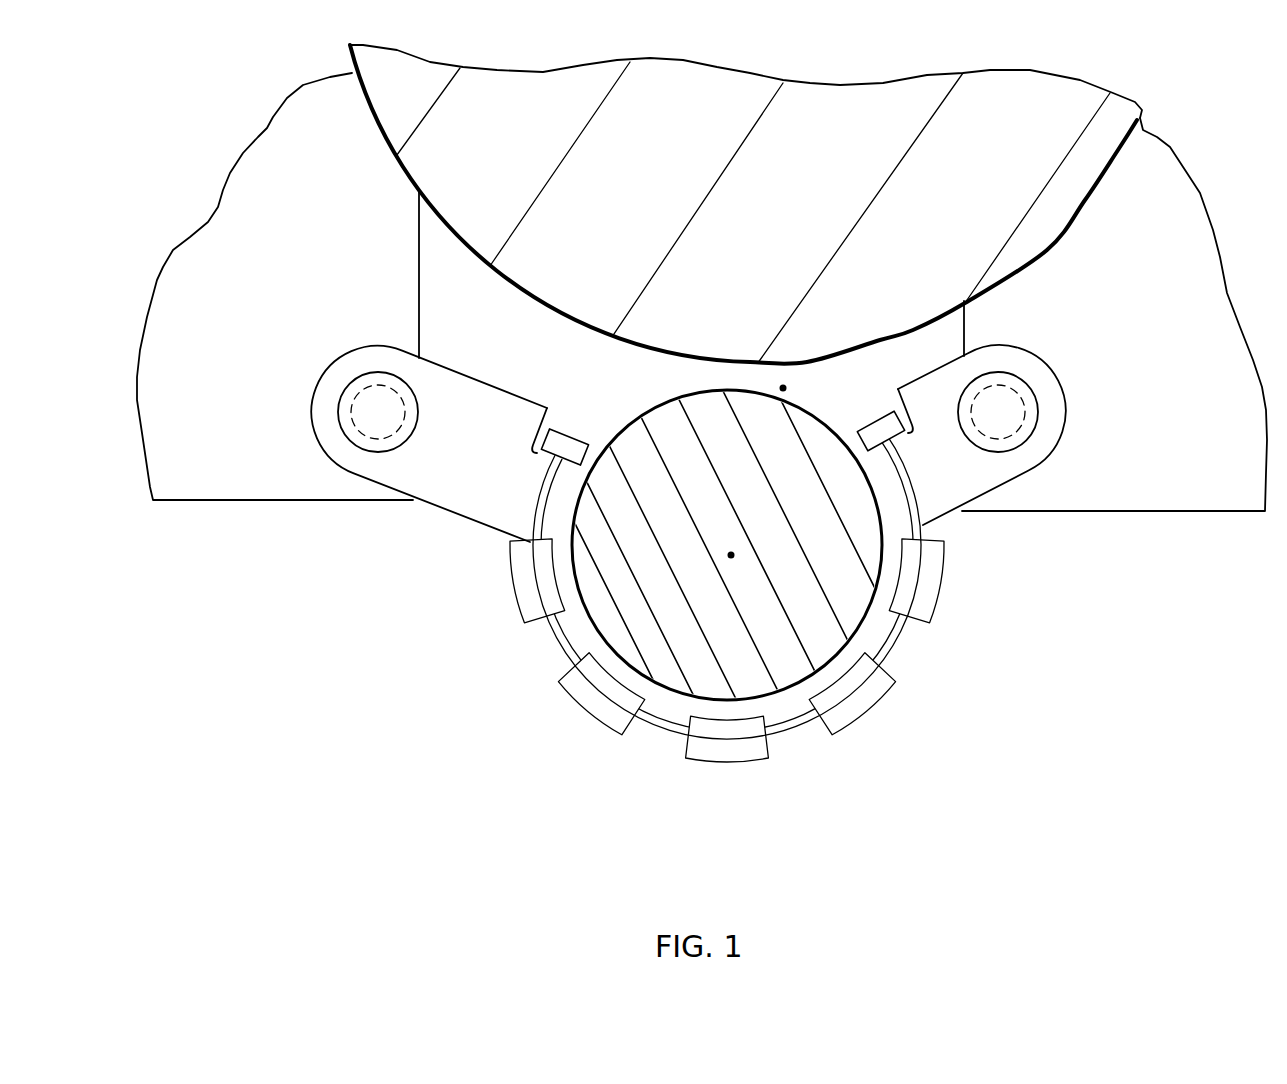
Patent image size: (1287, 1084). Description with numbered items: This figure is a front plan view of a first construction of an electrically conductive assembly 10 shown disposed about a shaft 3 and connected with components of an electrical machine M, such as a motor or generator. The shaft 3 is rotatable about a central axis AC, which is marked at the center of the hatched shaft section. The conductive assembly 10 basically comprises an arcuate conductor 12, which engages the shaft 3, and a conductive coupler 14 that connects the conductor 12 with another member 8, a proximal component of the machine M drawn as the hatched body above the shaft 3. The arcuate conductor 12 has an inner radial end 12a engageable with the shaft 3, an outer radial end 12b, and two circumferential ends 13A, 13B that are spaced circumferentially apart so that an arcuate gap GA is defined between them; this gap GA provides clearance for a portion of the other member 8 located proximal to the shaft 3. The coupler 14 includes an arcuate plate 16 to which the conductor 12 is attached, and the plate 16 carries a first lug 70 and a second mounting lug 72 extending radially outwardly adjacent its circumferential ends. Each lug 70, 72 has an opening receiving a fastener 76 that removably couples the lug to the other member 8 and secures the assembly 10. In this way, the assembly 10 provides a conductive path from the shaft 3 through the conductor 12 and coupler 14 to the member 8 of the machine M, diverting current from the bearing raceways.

The shaft 3 is at (680, 683).
The other member 8 is at (1025, 248).
The electrically conductive assembly 10 is at (458, 692).
The arcuate conductor 12 is at (750, 619).
The inner radial end 12a is at (870, 603).
The outer radial end 12b is at (905, 638).
The circumferential end 13A is at (589, 455).
The circumferential end 13B is at (862, 455).
The conductive coupler 14 is at (588, 722).
The arcuate plate 16 is at (518, 513).
The first lug 70 is at (375, 439).
The second mounting lug 72 is at (1057, 388).
The fastener 76 is at (350, 382).
The electrical machine M is at (1157, 556).
The arcuate gap GA is at (783, 388).
The central axis AC is at (731, 555).